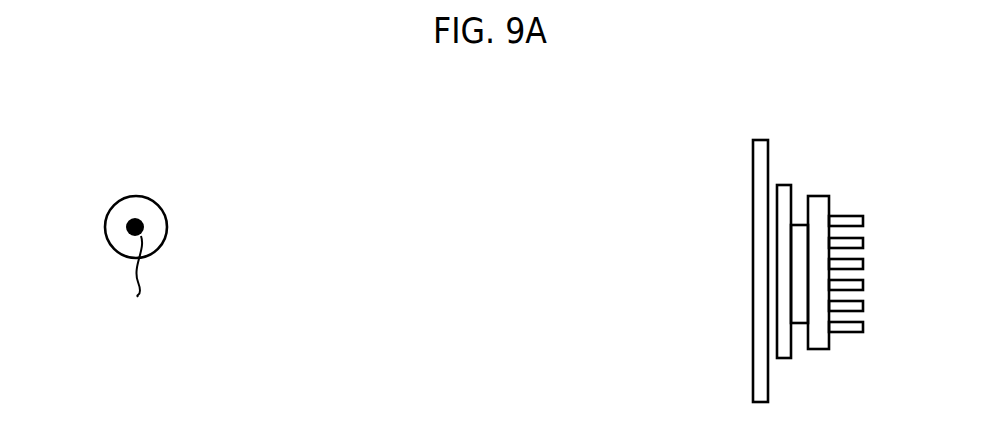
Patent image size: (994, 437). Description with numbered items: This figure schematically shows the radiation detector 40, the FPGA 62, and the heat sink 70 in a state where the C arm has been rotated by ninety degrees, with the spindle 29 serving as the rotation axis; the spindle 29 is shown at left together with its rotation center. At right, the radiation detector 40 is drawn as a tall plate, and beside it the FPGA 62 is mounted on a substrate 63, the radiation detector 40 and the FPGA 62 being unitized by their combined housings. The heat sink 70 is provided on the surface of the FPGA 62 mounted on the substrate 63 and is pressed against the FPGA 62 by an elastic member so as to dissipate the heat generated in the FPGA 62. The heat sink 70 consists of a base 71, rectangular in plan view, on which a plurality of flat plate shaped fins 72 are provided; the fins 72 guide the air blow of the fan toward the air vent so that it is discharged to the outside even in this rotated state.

The spindle 29 is at (167, 223).
The radiation detector 40 is at (761, 150).
The substrate 63 is at (780, 187).
The FPGA 62 is at (797, 230).
The heat sink 70 is at (872, 305).
The base 71 is at (819, 343).
The fins 72 is at (854, 224).